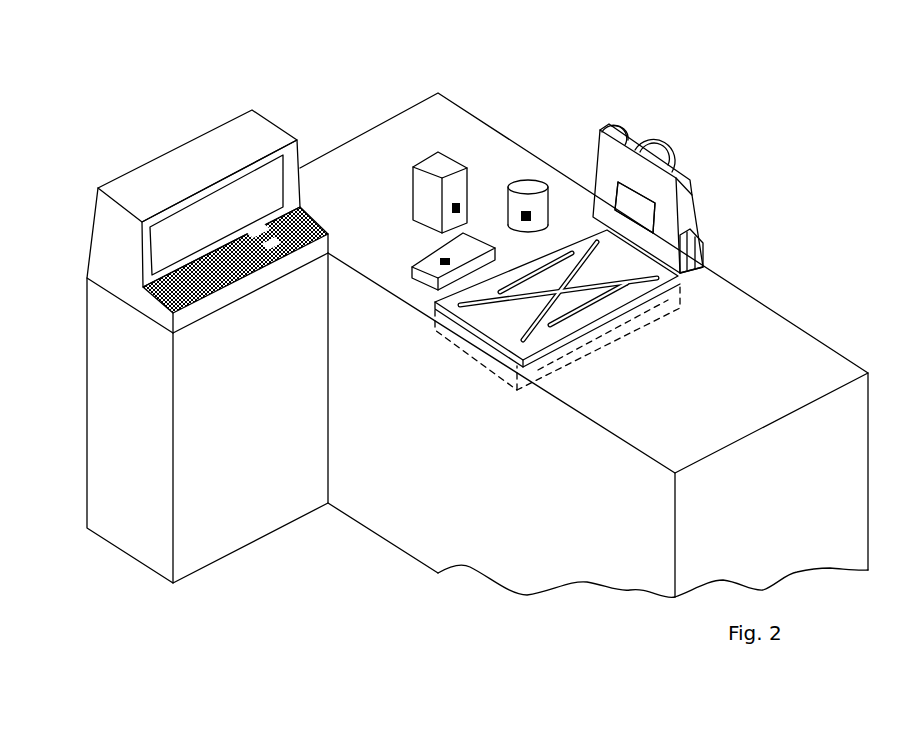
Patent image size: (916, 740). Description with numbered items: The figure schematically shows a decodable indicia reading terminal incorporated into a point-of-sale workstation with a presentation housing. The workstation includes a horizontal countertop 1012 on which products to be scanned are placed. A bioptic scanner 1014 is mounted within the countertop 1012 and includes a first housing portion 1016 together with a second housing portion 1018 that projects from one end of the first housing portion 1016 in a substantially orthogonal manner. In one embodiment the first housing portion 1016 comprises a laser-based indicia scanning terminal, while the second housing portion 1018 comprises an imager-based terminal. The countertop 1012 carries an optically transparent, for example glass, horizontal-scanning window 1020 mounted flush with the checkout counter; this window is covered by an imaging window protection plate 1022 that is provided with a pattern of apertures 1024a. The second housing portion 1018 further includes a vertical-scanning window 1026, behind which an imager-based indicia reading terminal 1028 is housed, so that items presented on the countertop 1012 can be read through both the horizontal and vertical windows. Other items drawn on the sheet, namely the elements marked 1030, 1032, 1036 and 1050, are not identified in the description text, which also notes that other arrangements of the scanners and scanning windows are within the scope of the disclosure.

The horizontal countertop 1012 is at (814, 380).
The bioptic scanner 1014 is at (712, 202).
The first housing portion 1016 is at (507, 298).
The second housing portion 1018 is at (678, 175).
The horizontal-scanning window 1020 is at (537, 362).
The imaging window protection plate 1022 is at (495, 318).
The apertures 1024a is at (538, 337).
The vertical-scanning window 1026 is at (647, 212).
The imager-based indicia reading terminal 1028 is at (635, 207).
The computer 1030 is at (397, 135).
The interface port 1032 is at (452, 212).
The card reader 1036 is at (706, 250).
The sensing region 1050 is at (655, 315).